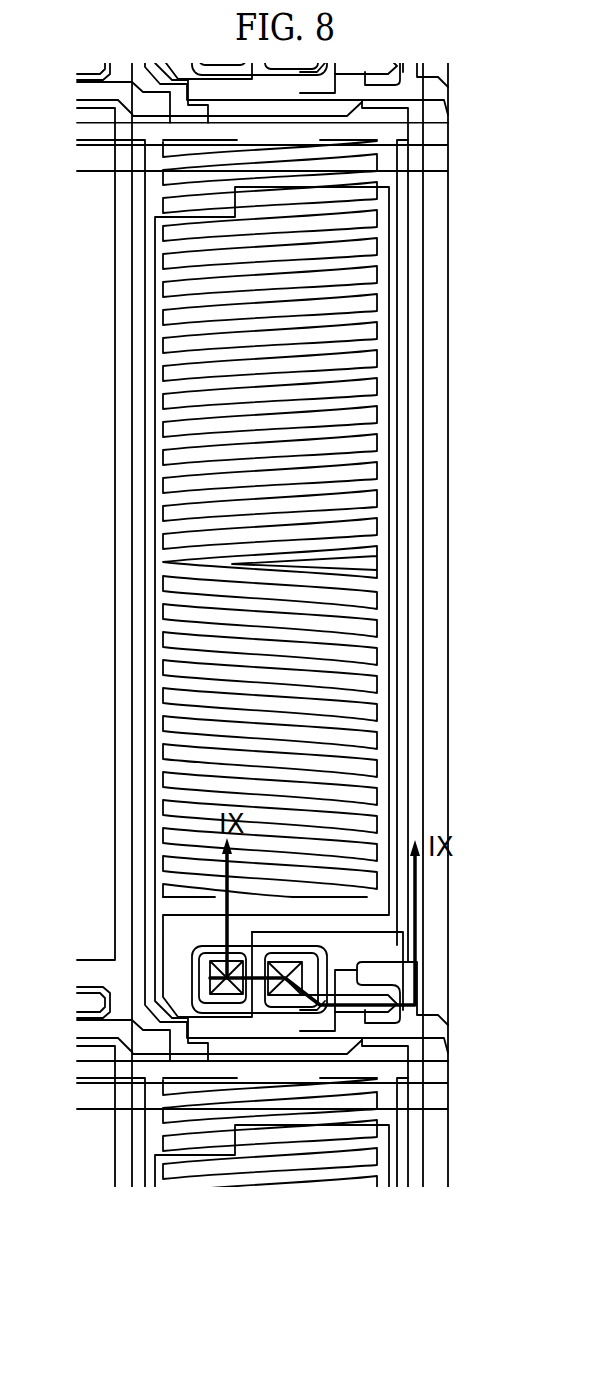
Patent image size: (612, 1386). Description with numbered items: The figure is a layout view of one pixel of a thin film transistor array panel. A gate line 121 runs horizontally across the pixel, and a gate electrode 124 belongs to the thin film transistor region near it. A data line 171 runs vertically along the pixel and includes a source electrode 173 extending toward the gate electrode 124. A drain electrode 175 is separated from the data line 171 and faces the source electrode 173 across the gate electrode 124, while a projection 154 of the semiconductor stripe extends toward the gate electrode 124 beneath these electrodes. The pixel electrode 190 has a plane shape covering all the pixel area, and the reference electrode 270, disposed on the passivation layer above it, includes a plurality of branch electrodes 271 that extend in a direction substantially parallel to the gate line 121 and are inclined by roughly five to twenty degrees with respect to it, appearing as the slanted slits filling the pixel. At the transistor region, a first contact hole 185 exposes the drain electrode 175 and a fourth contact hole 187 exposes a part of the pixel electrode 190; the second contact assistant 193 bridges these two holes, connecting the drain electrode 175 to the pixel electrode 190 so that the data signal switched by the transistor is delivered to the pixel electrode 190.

The pixel electrode 190 is at (393, 338).
The reference electrode 270 is at (397, 385).
The branch electrodes 271 is at (362, 470).
The data line 171 is at (408, 550).
The fourth contact hole 187 is at (200, 968).
The second contact assistant 193 is at (193, 985).
The source electrode 173 is at (365, 965).
The first contact hole 185 is at (395, 985).
The gate electrode 124 is at (400, 1005).
The projection 154 is at (372, 1040).
The gate line 121 is at (268, 1050).
The drain electrode 175 is at (372, 1022).